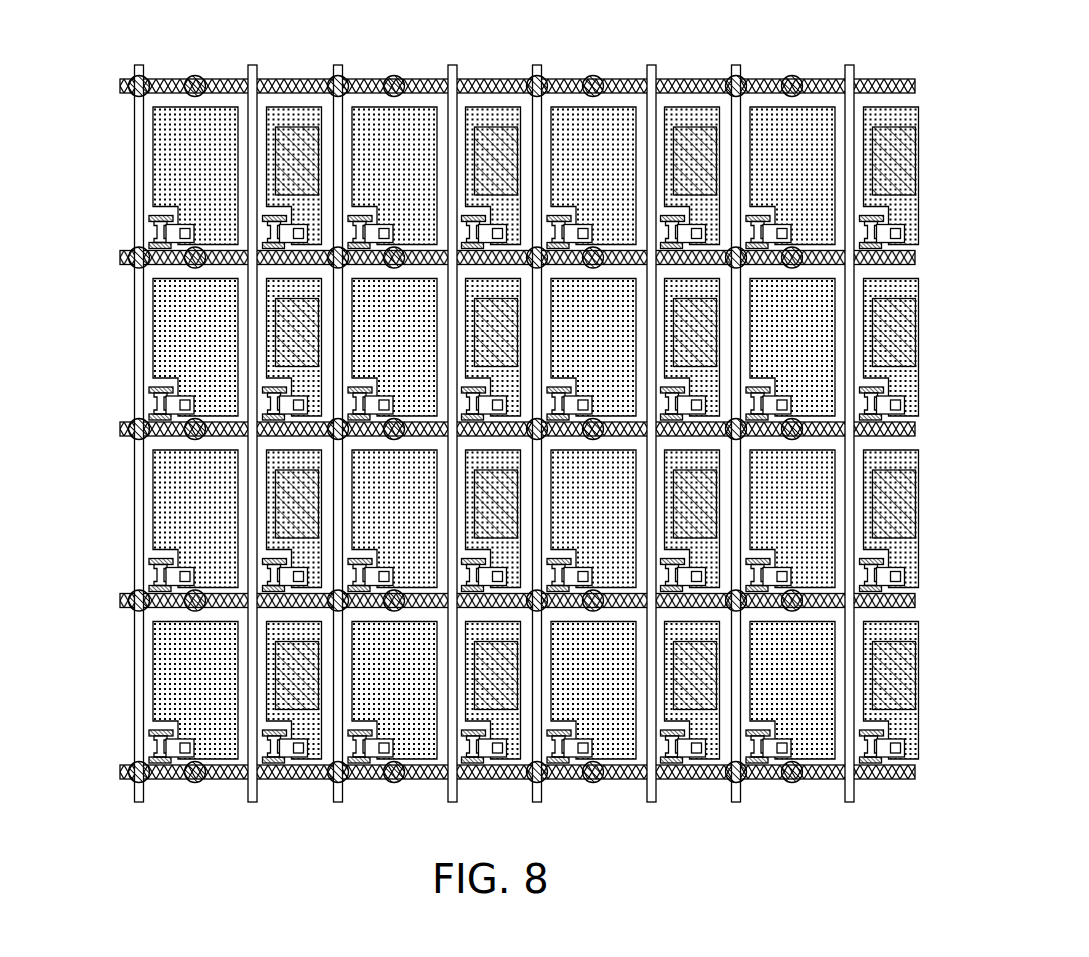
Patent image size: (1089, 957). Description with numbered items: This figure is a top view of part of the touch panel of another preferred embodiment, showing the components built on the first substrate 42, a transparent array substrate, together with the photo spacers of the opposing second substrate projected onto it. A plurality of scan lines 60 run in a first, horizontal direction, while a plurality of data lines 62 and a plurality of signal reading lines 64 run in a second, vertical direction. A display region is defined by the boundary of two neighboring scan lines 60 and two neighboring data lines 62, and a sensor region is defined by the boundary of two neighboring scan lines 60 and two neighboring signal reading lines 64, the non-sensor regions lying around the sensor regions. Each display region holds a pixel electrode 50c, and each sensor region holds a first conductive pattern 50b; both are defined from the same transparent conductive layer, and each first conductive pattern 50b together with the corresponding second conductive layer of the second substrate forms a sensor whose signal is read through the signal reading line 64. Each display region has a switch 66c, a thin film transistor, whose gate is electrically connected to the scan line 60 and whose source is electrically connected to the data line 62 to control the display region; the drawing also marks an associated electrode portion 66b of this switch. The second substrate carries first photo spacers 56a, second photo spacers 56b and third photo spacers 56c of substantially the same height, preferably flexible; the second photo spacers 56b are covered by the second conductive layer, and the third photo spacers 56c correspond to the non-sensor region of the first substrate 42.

The first substrate 42 is at (572, 438).
The scan lines 60 is at (120, 86).
The data lines 62 is at (143, 790).
The signal reading lines 64 is at (257, 790).
The first conductive pattern 50b is at (496, 108).
The pixel electrode 50c is at (818, 112).
The first photo spacers 56a is at (341, 77).
The second photo spacers 56b is at (902, 157).
The third photo spacers 56c is at (396, 77).
The drain electrode 66b is at (894, 730).
The switch (thin film transistor) 66c is at (558, 722).